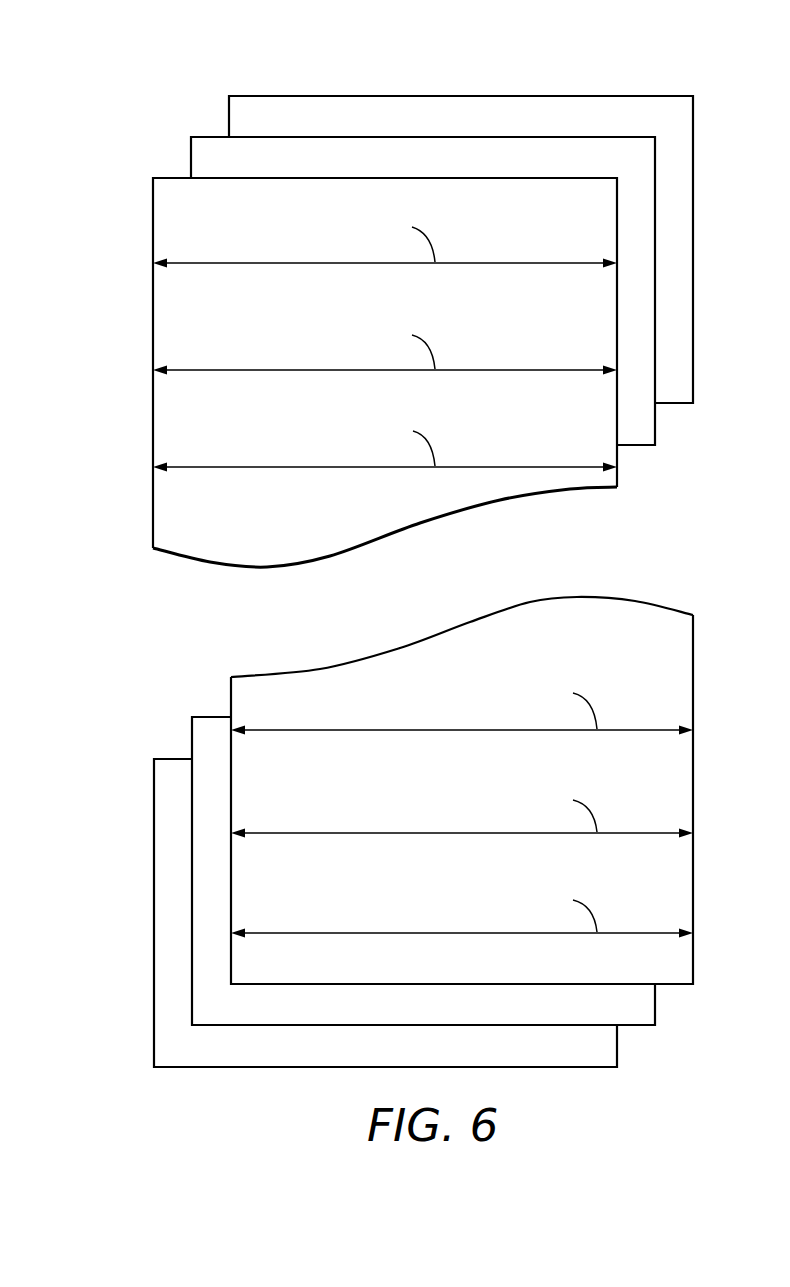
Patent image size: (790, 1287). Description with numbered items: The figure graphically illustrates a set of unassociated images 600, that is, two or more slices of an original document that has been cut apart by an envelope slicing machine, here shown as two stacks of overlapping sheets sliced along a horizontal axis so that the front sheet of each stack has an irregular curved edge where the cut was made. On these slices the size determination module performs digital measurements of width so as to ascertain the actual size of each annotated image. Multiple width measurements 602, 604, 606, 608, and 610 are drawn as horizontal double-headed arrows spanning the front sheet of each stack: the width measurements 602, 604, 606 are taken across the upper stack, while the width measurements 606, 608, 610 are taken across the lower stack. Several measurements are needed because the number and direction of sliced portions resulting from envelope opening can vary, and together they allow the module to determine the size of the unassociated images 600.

The unassociated images 600 is at (139, 78).
The width measurement 602 is at (272, 257).
The width measurement 604 is at (272, 364).
The width measurement 606 is at (271, 461).
The width measurement 608 is at (434, 828).
The width measurement 610 is at (434, 928).